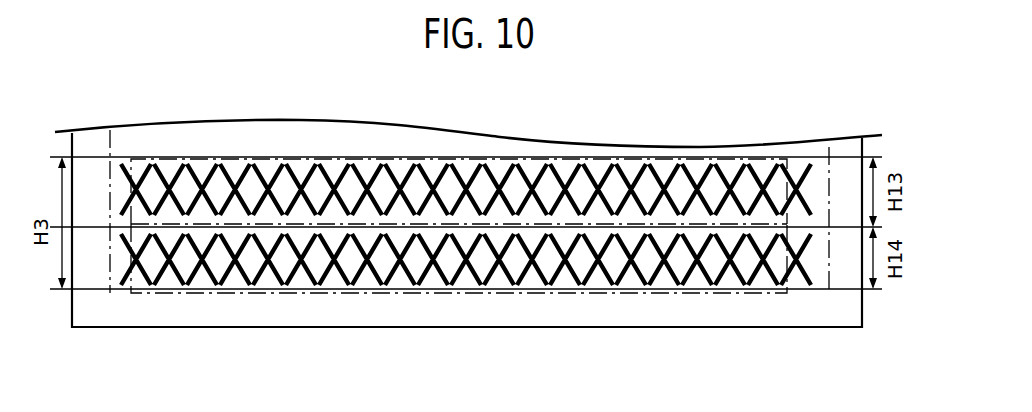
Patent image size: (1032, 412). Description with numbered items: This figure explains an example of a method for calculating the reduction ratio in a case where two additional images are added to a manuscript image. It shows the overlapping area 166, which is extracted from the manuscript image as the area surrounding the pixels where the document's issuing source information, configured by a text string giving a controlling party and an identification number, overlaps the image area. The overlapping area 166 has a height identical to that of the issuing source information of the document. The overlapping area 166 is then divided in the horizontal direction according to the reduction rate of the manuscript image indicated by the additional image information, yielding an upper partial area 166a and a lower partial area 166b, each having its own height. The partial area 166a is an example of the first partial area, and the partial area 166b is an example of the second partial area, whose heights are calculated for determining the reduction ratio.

The overlapping area 166 is at (128, 296).
The partial area 166a is at (787, 170).
The partial area 166b is at (787, 282).